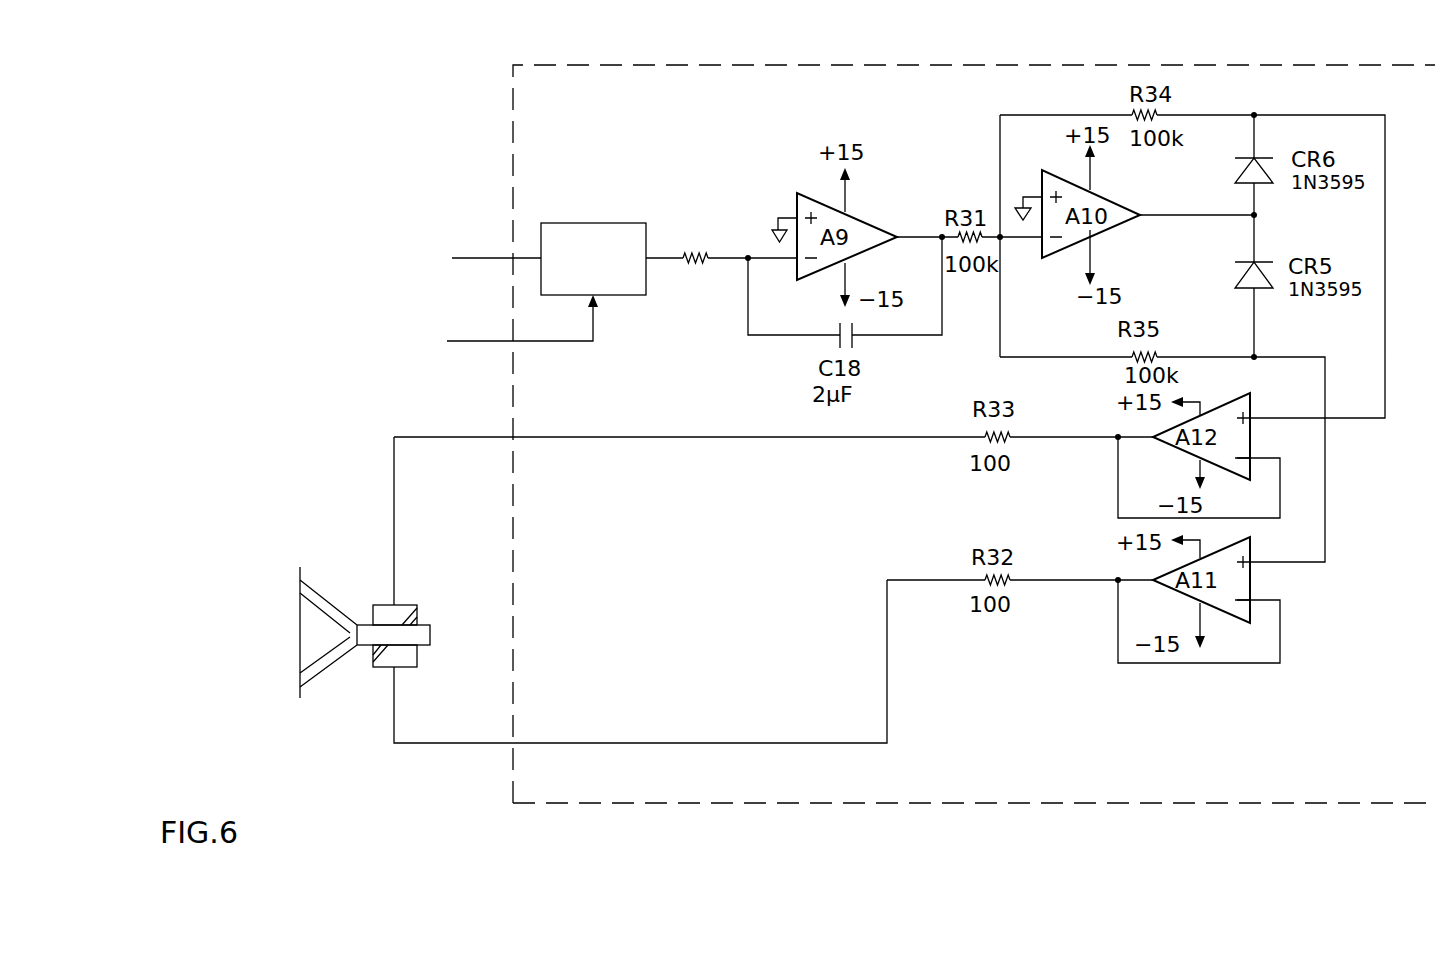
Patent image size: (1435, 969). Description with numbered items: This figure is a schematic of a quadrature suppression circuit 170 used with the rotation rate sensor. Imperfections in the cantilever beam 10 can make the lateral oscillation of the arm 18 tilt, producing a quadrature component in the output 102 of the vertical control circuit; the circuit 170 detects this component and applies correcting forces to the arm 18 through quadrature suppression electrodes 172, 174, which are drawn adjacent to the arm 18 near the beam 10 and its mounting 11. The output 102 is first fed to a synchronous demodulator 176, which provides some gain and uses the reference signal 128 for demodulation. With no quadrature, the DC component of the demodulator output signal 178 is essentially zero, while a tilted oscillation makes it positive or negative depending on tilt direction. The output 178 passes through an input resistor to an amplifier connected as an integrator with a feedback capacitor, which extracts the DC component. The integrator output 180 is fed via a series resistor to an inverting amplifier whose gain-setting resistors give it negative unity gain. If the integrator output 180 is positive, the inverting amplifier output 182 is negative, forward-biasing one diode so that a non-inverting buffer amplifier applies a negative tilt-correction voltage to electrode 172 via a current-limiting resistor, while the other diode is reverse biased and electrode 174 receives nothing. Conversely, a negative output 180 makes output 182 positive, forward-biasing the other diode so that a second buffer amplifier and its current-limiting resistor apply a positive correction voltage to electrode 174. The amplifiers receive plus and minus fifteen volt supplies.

The cantilever beam 10 is at (322, 638).
The diaphragm 11 is at (300, 667).
The arm 18 is at (432, 633).
The output of the vertical control circuit 102 is at (490, 257).
The F0Q reference signal 128 is at (477, 343).
The quadrature suppression circuit 170 is at (663, 840).
The quadrature suppression electrode 172 is at (408, 667).
The quadrature suppression electrode 174 is at (400, 606).
The synchronous demodulator 176 is at (593, 223).
The output signal of the synchronous demodulator 178 is at (653, 257).
The integrator output 180 is at (913, 232).
The output of amplifier A10 182 is at (1202, 217).